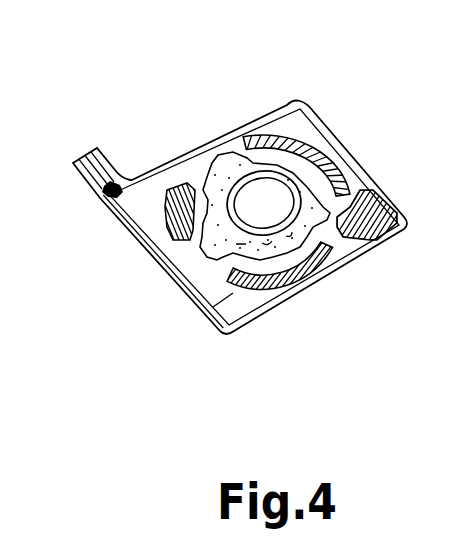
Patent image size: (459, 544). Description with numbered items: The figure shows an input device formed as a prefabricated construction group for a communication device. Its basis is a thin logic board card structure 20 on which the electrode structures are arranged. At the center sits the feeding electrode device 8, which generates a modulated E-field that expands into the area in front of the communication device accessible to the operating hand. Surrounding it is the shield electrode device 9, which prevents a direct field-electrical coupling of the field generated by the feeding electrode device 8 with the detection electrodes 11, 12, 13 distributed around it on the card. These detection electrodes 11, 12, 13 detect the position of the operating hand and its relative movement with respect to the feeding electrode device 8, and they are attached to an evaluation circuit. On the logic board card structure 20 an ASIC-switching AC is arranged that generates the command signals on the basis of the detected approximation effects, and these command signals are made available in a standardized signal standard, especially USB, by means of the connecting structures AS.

The logic board card structure 20 is at (291, 110).
The shield electrode device 9 is at (230, 163).
The feeding electrode device 8 is at (272, 192).
The detection electrode 12 is at (313, 148).
The detection electrode 13 is at (297, 270).
The detection electrode 11 is at (173, 237).
The connecting structures AS is at (87, 135).
The ASIC-switching AC is at (110, 192).